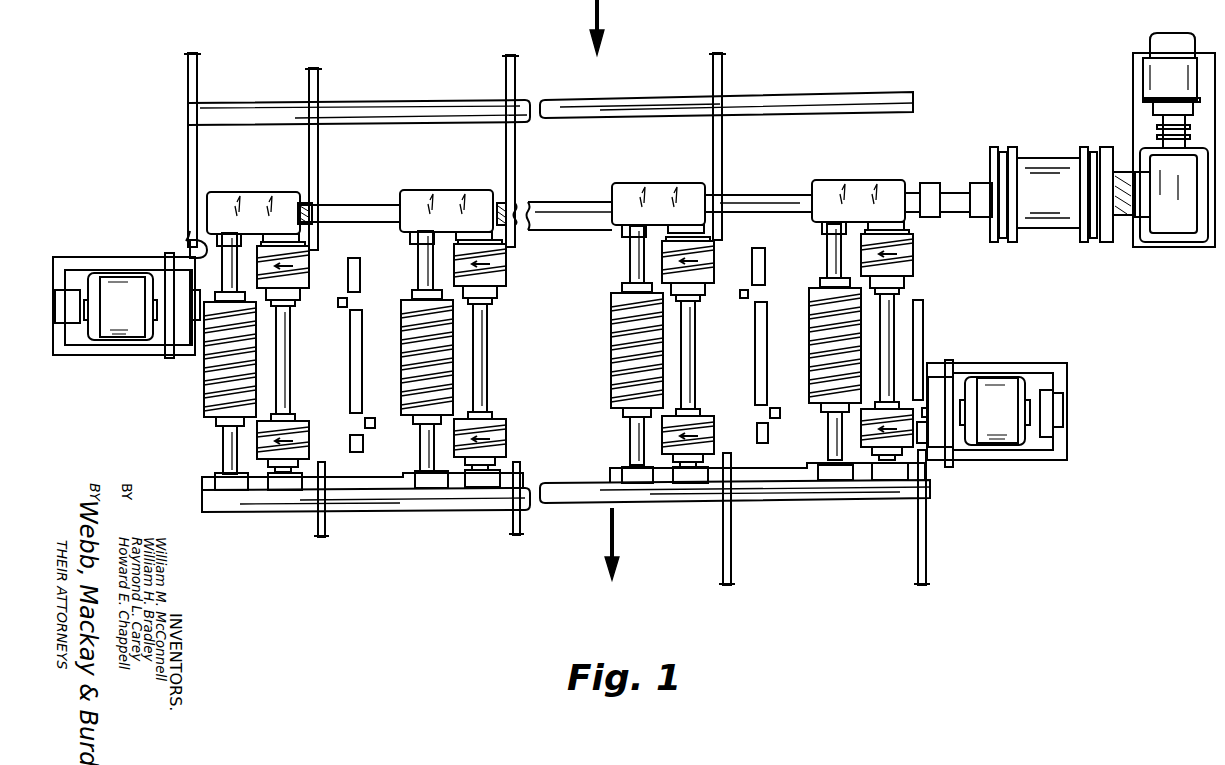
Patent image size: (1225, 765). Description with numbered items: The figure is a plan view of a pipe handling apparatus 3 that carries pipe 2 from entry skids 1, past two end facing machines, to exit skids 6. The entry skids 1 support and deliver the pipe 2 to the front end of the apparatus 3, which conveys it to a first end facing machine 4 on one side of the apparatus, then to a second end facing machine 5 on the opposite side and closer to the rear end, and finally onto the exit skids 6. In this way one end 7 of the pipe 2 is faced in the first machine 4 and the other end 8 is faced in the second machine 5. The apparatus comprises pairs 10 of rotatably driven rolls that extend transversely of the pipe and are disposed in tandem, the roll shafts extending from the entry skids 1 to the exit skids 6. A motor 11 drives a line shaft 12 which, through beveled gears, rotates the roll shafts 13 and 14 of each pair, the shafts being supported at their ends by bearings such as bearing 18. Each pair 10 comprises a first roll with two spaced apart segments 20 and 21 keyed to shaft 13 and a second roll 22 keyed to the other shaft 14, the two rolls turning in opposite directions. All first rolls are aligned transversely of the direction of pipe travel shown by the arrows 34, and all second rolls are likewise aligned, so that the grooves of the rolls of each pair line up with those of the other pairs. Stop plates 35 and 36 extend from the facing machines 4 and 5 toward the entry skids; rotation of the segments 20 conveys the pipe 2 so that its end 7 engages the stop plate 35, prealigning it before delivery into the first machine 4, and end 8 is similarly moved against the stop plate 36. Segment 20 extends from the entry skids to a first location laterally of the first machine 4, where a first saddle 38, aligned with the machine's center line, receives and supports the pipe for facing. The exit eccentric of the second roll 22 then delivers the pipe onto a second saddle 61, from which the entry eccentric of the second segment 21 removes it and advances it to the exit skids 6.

The entry skids 1 is at (188, 158).
The pipe 2 is at (812, 96).
The handling apparatus 3 is at (561, 328).
The first end facing machine 4 is at (104, 257).
The second end facing machine 5 is at (1013, 363).
The exit skids 6 is at (325, 530).
The end of the pipe 7 is at (186, 112).
The other end of the pipe 8 is at (920, 100).
The pairs of rotatably driven rolls 10 is at (560, 357).
The motor 11 is at (1150, 44).
The line shaft 12 is at (790, 196).
The roll shaft 13 is at (290, 358).
The roll shaft 14 is at (418, 270).
The bearing 18 is at (630, 470).
The first segment 20 is at (308, 271).
The second segment 21 is at (309, 444).
The second roll 22 is at (204, 385).
The arrows 34 is at (600, 22).
The stop plate 35 is at (189, 244).
The stop plate 36 is at (923, 341).
The first saddle 38 is at (338, 304).
The second saddle 61 is at (375, 424).